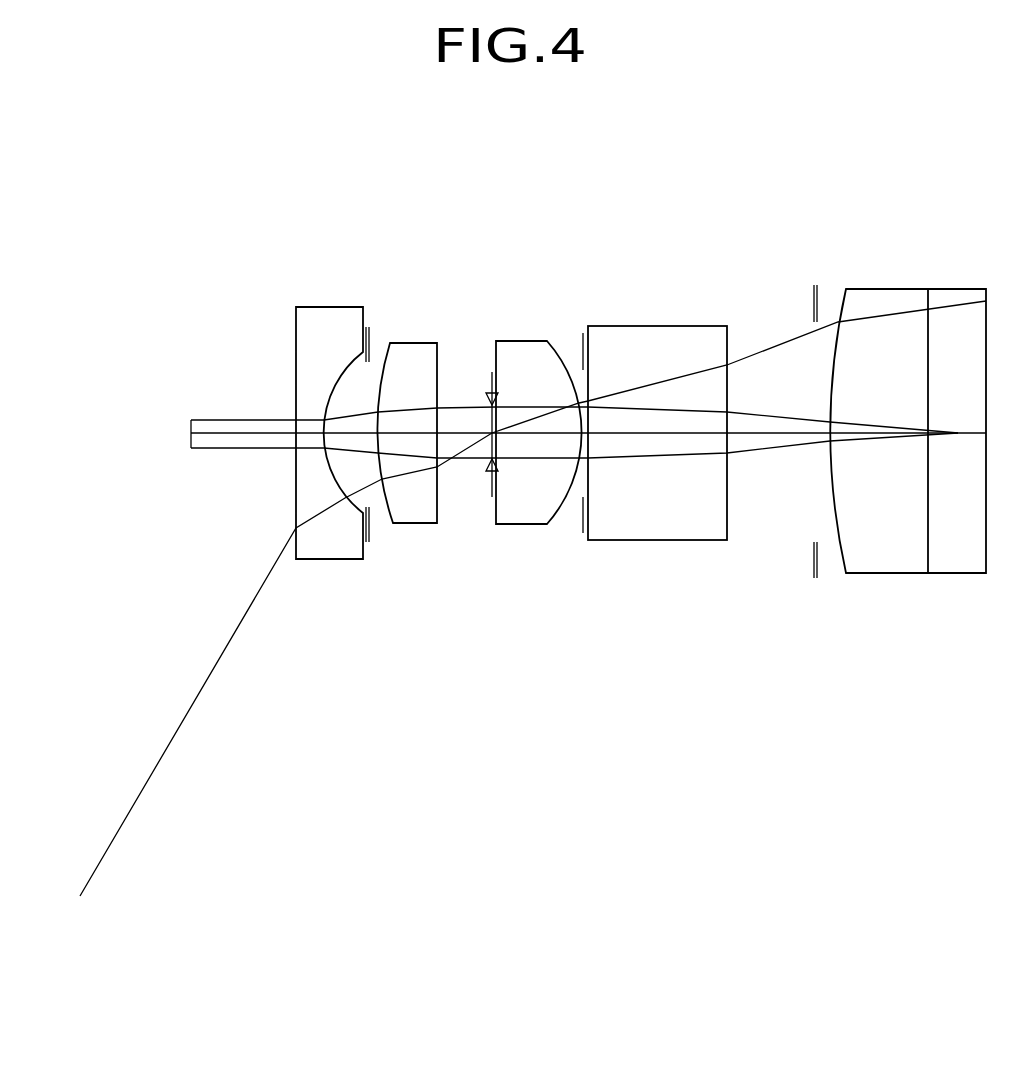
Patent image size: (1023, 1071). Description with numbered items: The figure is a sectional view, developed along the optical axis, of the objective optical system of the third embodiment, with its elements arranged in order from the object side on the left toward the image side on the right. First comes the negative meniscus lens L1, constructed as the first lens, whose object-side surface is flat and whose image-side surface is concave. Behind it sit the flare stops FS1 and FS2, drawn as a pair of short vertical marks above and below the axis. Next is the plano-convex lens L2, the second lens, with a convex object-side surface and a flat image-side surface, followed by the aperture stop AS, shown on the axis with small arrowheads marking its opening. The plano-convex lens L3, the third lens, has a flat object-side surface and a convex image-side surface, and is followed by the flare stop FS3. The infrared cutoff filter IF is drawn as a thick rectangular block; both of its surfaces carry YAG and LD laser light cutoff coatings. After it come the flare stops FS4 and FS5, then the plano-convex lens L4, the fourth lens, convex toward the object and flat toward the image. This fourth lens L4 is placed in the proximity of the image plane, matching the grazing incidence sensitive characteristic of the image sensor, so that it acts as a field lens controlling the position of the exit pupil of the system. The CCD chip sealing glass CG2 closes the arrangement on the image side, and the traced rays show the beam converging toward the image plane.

The negative meniscus lens L1 is at (330, 307).
The plano-convex lens L2 is at (412, 343).
The plano-convex lens L3 is at (517, 341).
The infrared cutoff filter IF is at (700, 325).
The plano-convex lens L4 is at (885, 288).
The CCD chip sealing glass CG2 is at (953, 288).
The flare stop FS1 is at (363, 547).
The flare stop FS2 is at (370, 530).
The aperture stop AS is at (490, 485).
The flare stop FS3 is at (582, 517).
The flare stop FS4 is at (813, 560).
The flare stop FS5 is at (818, 560).